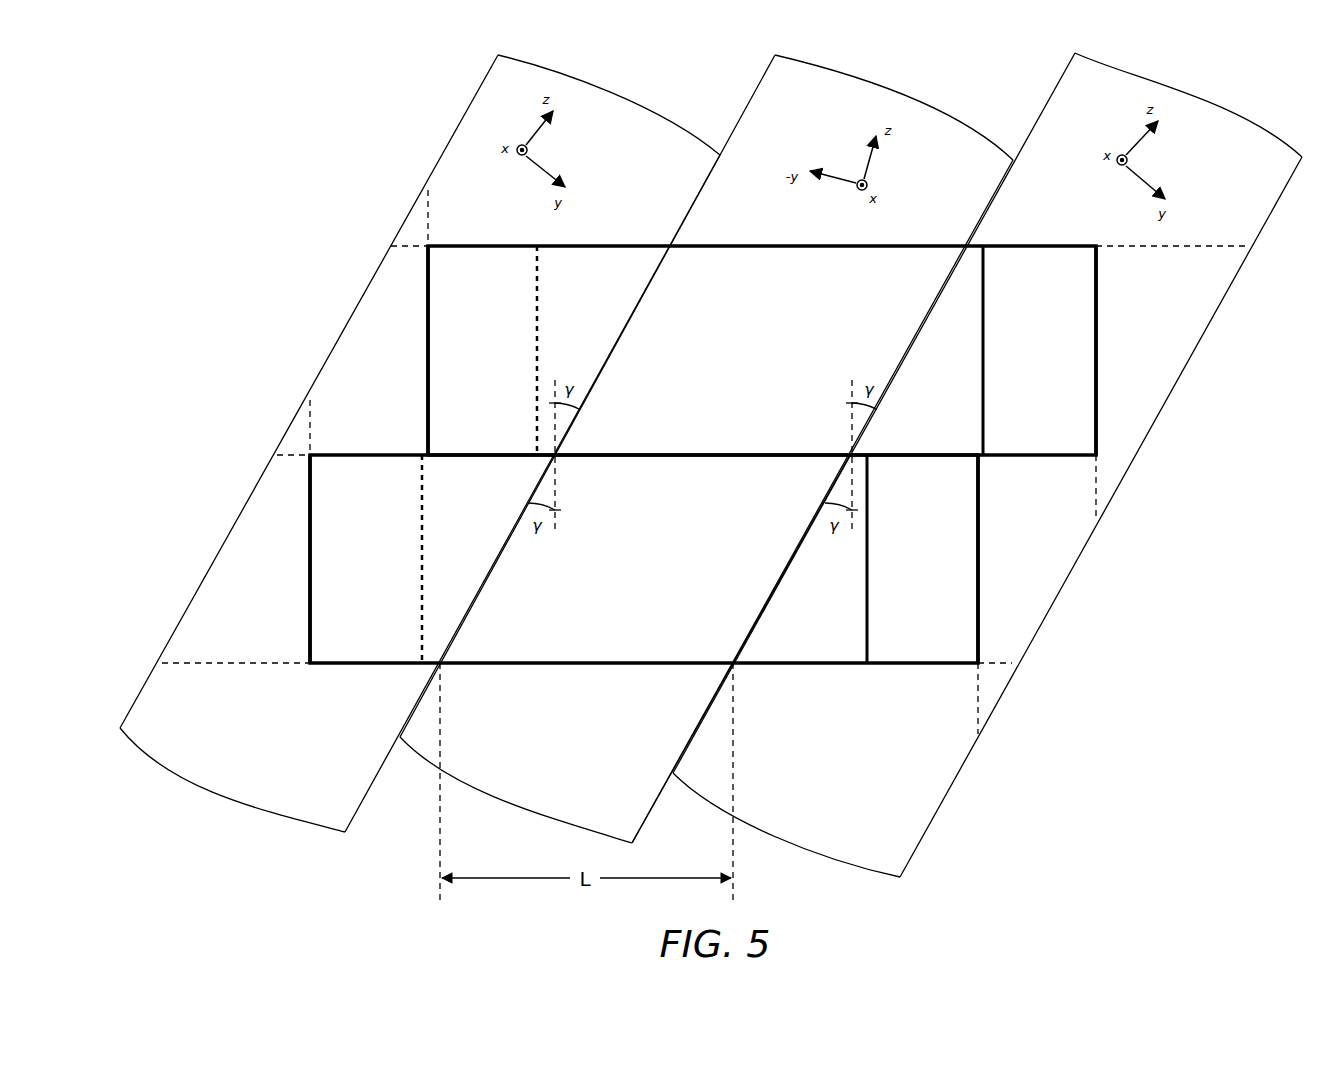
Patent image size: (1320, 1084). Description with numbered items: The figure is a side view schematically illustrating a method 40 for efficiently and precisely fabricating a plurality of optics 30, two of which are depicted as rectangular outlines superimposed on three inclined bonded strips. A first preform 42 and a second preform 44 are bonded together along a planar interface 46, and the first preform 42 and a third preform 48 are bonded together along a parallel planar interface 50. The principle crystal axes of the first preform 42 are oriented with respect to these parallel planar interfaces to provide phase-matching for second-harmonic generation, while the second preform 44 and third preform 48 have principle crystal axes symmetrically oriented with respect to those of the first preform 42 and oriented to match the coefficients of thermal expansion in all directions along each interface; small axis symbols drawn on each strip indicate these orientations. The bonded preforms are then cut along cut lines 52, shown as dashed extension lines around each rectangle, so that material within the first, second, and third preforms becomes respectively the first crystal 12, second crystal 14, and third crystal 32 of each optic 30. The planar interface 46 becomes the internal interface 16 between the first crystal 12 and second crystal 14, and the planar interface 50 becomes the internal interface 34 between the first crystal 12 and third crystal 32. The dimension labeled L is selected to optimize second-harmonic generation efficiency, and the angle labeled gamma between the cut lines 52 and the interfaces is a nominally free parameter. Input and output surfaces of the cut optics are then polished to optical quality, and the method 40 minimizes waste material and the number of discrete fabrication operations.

The method 40 is at (238, 104).
The third preform 48 is at (678, 127).
The first preform 42 is at (965, 127).
The second preform 44 is at (1250, 122).
The first crystal 12 is at (702, 454).
The second crystal 14 is at (1001, 454).
The third crystal 32 is at (414, 454).
The optic 30 is at (703, 454).
The internal interface 16 is at (925, 317).
The internal interface 34 is at (475, 598).
The planar interface 46 is at (690, 748).
The planar interface 50 is at (408, 715).
The cut lines 52 is at (308, 432).